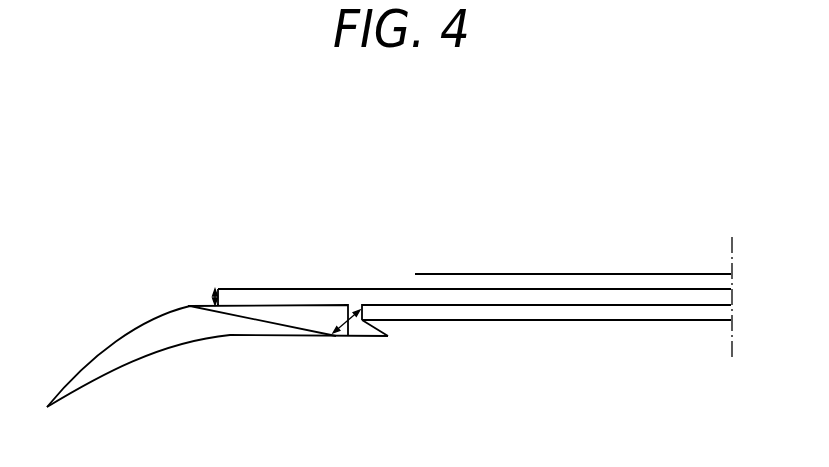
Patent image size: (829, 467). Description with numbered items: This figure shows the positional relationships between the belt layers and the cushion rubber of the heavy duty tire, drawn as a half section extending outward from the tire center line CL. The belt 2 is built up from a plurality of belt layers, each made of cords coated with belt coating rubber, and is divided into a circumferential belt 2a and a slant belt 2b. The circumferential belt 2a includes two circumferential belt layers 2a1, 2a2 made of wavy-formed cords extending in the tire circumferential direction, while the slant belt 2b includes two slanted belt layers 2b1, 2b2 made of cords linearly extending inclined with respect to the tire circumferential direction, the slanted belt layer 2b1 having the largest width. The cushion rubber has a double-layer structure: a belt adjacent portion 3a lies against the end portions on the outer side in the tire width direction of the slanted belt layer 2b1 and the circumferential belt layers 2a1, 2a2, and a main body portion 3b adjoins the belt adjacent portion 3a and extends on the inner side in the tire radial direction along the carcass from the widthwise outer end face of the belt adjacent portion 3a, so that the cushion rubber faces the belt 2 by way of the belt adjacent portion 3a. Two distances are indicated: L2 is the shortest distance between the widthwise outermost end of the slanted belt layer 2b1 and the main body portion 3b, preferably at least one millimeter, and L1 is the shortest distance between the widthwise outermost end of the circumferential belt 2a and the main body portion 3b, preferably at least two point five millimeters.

The belt 2 is at (459, 215).
The circumferential belt 2a is at (459, 240).
The slant belt 2b is at (474, 217).
The circumferential belt layer 2a1 is at (478, 320).
The circumferential belt layer 2a2 is at (533, 305).
The slanted belt layer 2b1 is at (594, 290).
The slanted belt layer 2b2 is at (644, 274).
The belt adjacent portion 3a is at (303, 318).
The main body portion 3b is at (192, 330).
The shortest distance L1 is at (345, 324).
The shortest distance L2 is at (215, 300).
The center line CL is at (730, 280).